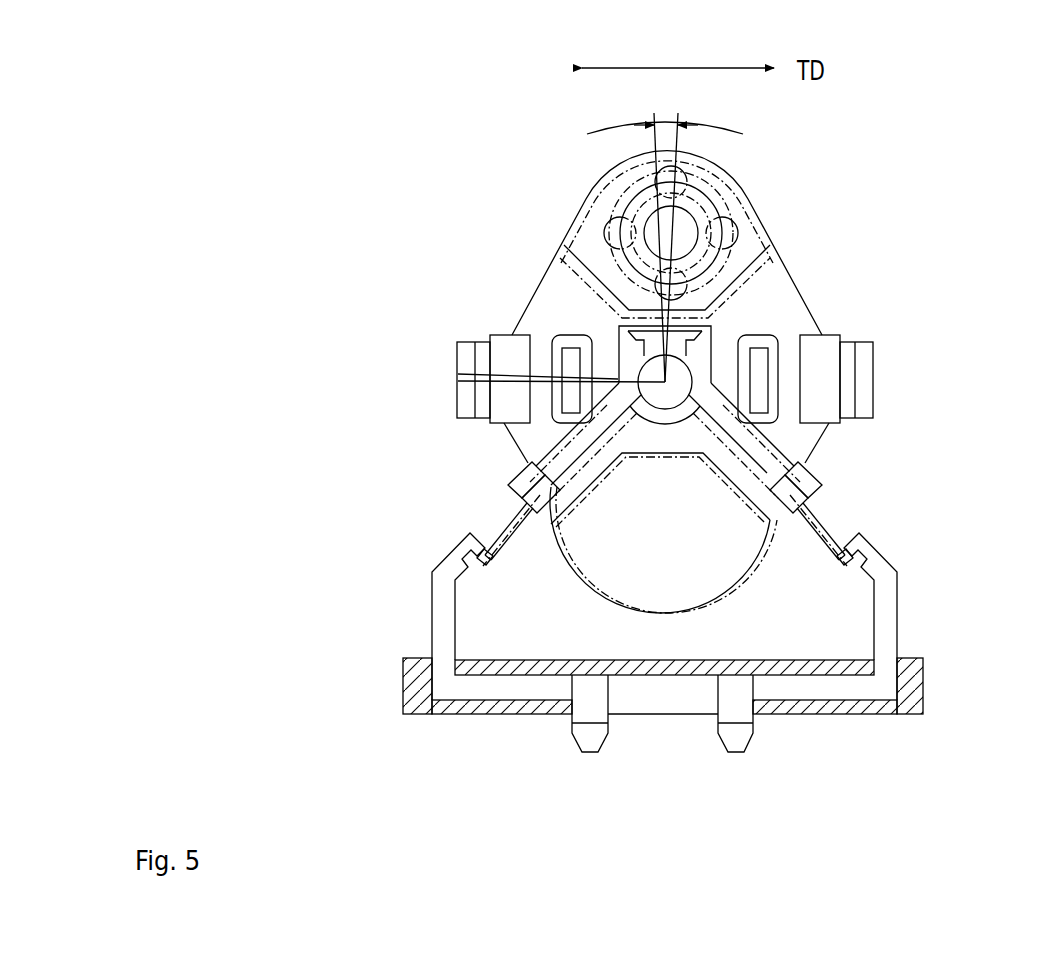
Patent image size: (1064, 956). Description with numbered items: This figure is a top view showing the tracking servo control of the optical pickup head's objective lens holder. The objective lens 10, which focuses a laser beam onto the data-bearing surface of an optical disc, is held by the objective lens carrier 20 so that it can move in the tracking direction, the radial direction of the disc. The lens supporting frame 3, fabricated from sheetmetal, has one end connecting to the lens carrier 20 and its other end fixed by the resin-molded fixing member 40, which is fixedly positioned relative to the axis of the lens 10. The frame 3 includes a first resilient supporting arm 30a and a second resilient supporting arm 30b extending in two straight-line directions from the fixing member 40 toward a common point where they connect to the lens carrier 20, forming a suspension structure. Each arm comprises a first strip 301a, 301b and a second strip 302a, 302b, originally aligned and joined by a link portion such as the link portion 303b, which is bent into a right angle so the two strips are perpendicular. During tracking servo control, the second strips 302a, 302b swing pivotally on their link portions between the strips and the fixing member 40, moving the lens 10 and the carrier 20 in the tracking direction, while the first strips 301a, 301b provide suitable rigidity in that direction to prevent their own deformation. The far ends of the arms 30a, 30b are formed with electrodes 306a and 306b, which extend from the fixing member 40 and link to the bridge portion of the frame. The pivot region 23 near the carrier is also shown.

The lens supporting frame 3 is at (402, 507).
The objective lens 10 is at (640, 212).
The objective lens carrier 20 is at (535, 283).
The pivot 23 is at (682, 373).
The first resilient supporting arm 30a is at (428, 577).
The second resilient supporting arm 30b is at (900, 582).
The fixing member 40 is at (910, 693).
The first strip 301a is at (815, 473).
The first strip 301b is at (515, 473).
The second strip 302a is at (822, 518).
The second strip 302b is at (512, 518).
The link portion 303b is at (488, 556).
The electrode 306a is at (746, 737).
The electrode 306b is at (592, 737).